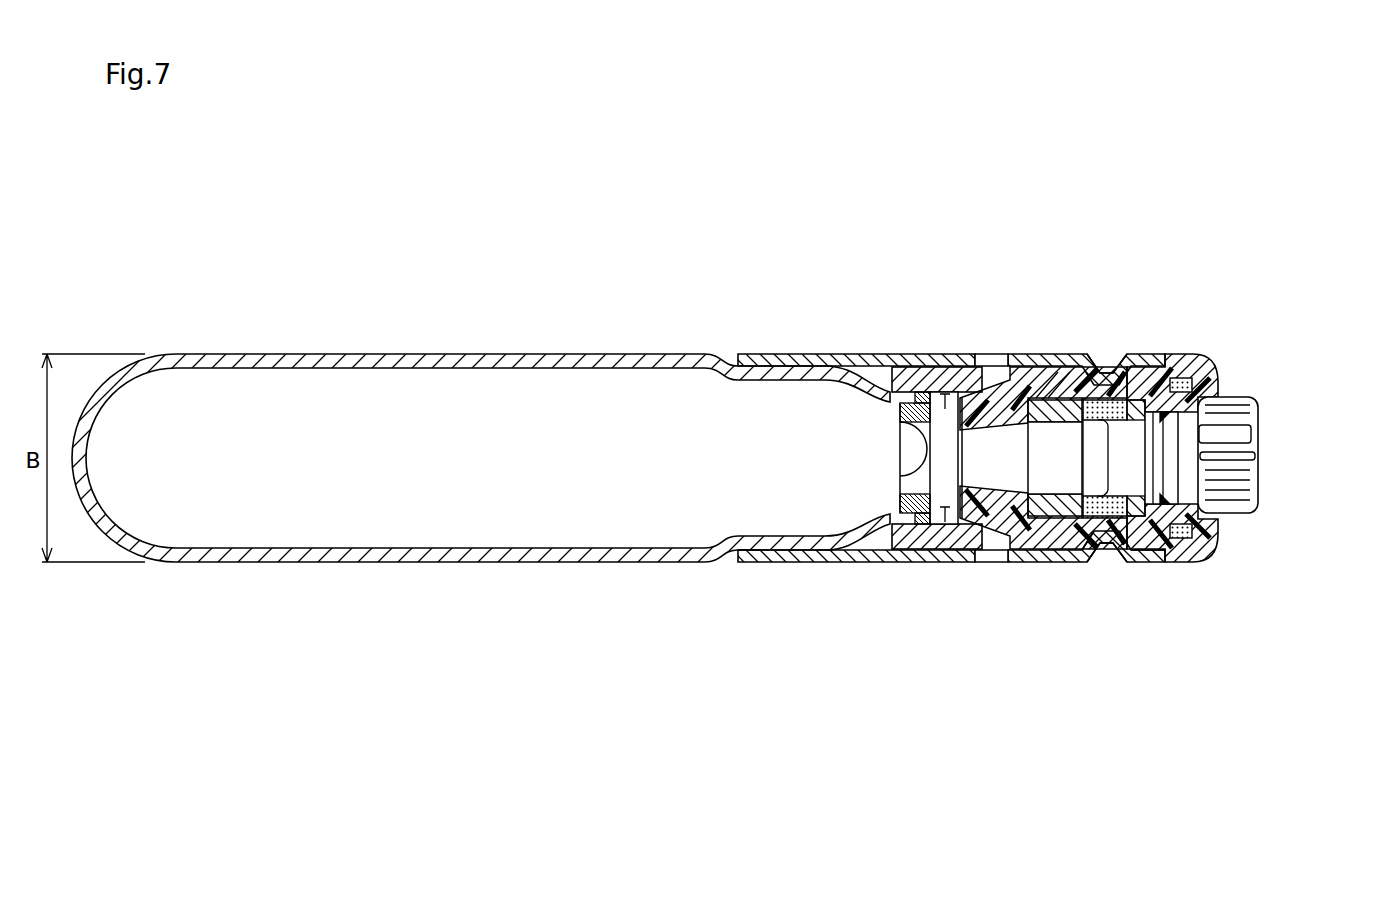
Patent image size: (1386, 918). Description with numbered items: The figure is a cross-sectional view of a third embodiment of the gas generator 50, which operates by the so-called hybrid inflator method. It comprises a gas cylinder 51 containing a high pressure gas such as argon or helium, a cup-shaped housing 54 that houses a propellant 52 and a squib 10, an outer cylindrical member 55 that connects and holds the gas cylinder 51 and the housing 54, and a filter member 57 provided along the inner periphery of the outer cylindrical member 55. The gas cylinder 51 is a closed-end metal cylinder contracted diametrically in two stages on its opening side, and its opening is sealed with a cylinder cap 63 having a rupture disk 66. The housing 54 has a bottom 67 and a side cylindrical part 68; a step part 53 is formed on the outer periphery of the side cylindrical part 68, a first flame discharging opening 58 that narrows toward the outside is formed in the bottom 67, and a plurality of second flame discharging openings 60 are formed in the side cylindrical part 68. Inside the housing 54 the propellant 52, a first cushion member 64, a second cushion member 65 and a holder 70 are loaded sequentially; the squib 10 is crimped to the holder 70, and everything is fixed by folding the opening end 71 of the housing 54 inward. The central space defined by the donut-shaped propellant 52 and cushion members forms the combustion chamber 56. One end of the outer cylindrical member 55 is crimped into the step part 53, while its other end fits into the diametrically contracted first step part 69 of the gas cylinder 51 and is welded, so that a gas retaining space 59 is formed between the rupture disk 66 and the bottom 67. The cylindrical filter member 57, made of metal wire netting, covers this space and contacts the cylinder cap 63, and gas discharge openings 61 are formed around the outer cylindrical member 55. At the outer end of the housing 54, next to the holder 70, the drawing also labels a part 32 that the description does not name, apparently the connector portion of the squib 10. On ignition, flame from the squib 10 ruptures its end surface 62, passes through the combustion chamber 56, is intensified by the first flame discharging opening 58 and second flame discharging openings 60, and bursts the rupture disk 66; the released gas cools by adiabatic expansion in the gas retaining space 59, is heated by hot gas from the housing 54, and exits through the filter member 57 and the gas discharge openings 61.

The gas generator 50 is at (574, 250).
The gas cylinder 51 is at (432, 354).
The propellant 52 is at (1035, 520).
The step part 53 is at (1113, 552).
The housing 54 is at (1206, 353).
The outer cylindrical member 55 is at (772, 354).
The combustion chamber 56 is at (1066, 432).
The filter member 57 is at (905, 367).
The first flame discharging opening 58 is at (965, 550).
The gas retaining space 59 is at (934, 549).
The second flame discharging openings 60 is at (1007, 382).
The gas discharge opening 61 is at (990, 354).
The end surface 62 is at (1118, 375).
The cylinder cap 63 is at (890, 460).
The first cushion member 64 is at (1083, 545).
The second cushion member 65 is at (1143, 547).
The rupture disk 66 is at (917, 475).
The bottom 67 is at (945, 395).
The side cylindrical part 68 is at (1036, 380).
The first step part 69 is at (748, 550).
The holder 70 is at (1197, 394).
The opening end 71 is at (1218, 530).
The squib 10 is at (1162, 497).
The connecting portion 32 is at (1250, 455).